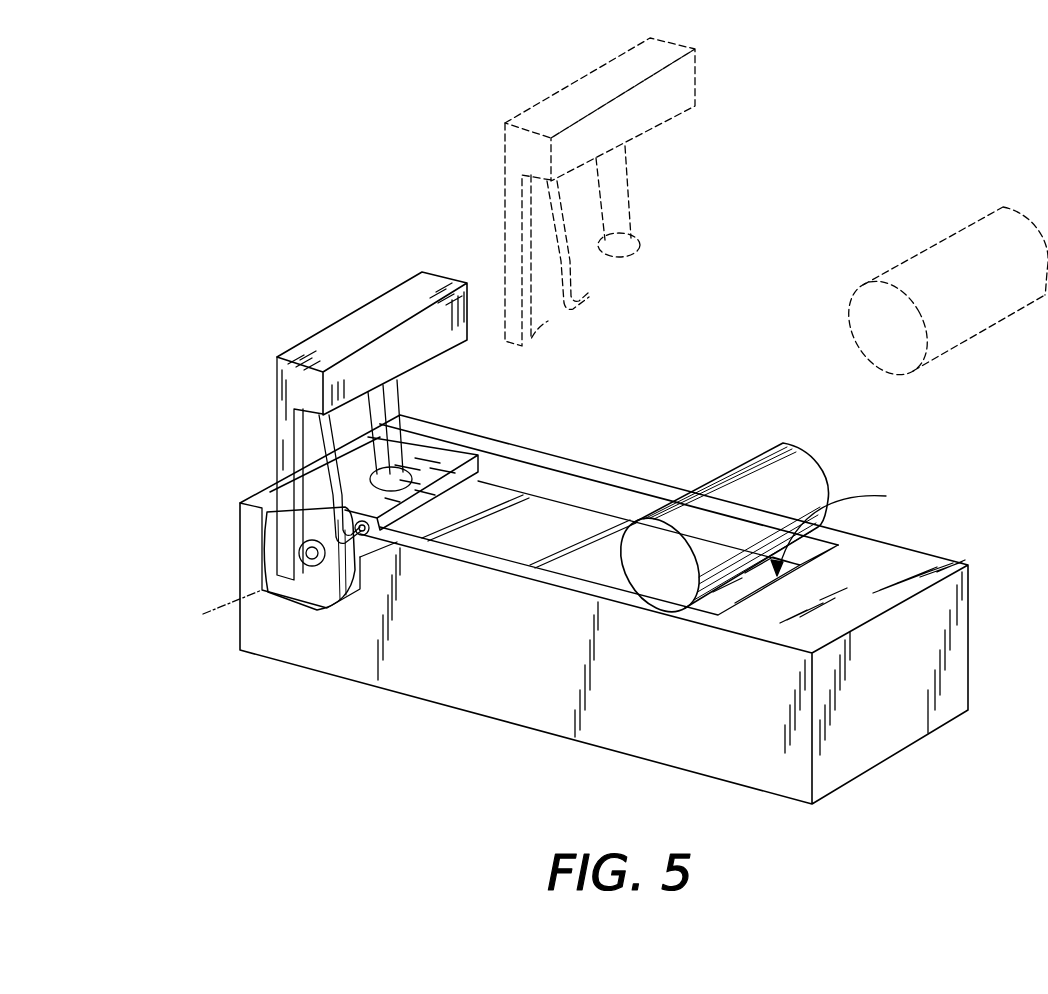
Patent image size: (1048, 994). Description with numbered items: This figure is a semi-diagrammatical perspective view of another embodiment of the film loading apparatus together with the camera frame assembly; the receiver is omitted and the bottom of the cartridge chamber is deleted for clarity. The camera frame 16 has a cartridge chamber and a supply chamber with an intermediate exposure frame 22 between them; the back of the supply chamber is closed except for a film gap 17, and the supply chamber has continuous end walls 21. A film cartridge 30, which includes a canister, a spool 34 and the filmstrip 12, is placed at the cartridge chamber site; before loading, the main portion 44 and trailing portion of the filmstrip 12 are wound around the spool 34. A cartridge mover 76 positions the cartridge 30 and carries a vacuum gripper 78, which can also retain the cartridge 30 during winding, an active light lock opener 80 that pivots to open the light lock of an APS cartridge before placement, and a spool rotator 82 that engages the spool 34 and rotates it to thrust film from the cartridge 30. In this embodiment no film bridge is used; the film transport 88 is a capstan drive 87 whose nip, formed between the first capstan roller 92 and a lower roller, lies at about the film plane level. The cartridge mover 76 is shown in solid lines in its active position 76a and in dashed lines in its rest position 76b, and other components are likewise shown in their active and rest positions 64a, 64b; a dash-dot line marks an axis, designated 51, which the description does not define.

The filmstrip 12 is at (582, 539).
The camera frame 16 is at (604, 621).
The film gap 17 is at (843, 531).
The end walls 21 is at (745, 757).
The exposure frame 22 is at (493, 560).
The film cartridge 30 is at (440, 452).
The spool 34 is at (328, 608).
The main portion 44 is at (543, 510).
The pivot axis 51 is at (218, 605).
The active position 64a is at (791, 515).
The rest position 64b is at (980, 217).
The cartridge mover 76 is at (320, 503).
The active position 76a is at (320, 503).
The rest position 76b is at (630, 47).
The vacuum gripper 78 is at (400, 392).
The active light lock opener 80 is at (355, 552).
The spool rotator 82 is at (283, 532).
The capstan drive 87 is at (791, 515).
The film transport 88 is at (791, 515).
The first capstan roller 92 is at (785, 444).